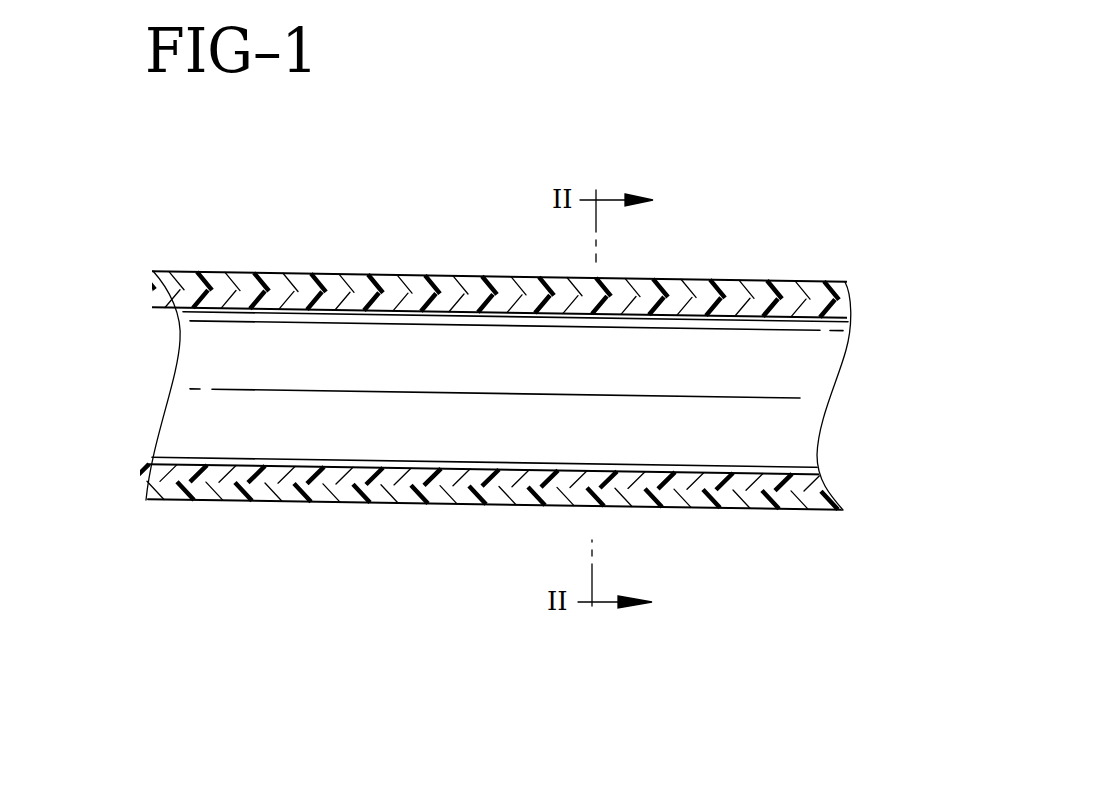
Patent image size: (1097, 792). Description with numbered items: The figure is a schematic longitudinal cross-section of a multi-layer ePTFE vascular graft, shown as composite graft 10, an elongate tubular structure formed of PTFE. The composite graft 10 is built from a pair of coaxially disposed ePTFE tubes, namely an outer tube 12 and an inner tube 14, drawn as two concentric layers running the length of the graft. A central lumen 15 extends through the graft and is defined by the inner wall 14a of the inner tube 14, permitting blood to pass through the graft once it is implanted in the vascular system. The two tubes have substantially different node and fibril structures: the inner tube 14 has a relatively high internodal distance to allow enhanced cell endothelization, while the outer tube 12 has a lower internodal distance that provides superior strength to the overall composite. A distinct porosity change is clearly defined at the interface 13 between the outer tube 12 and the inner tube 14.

The composite graft 10 is at (726, 173).
The outer tube 12 is at (456, 494).
The interface 13 is at (757, 300).
The inner tube 14 is at (340, 303).
The inner wall 14a is at (700, 318).
The central lumen 15 is at (250, 382).